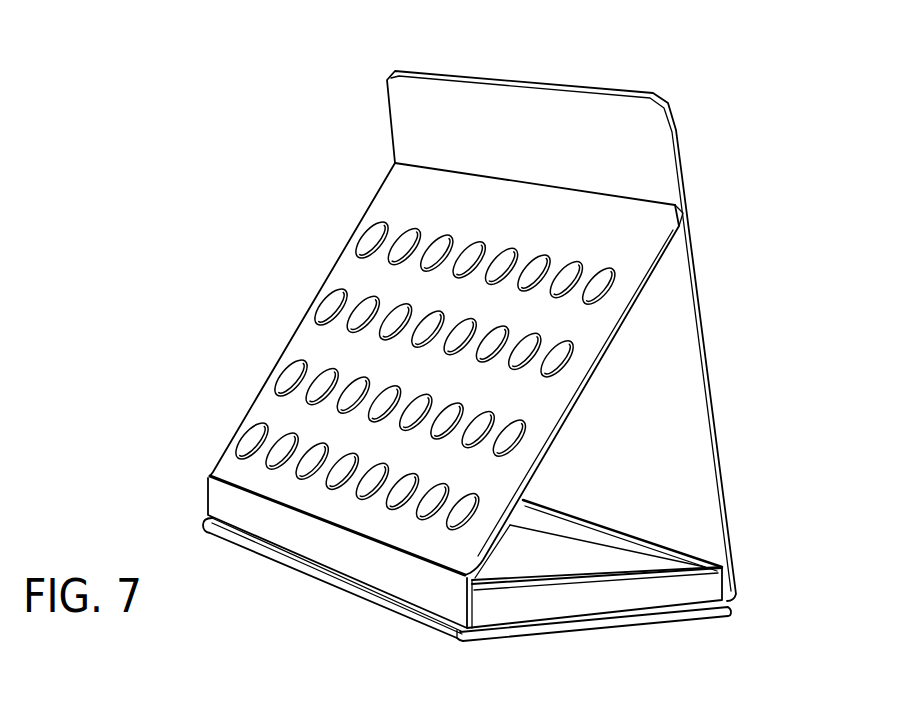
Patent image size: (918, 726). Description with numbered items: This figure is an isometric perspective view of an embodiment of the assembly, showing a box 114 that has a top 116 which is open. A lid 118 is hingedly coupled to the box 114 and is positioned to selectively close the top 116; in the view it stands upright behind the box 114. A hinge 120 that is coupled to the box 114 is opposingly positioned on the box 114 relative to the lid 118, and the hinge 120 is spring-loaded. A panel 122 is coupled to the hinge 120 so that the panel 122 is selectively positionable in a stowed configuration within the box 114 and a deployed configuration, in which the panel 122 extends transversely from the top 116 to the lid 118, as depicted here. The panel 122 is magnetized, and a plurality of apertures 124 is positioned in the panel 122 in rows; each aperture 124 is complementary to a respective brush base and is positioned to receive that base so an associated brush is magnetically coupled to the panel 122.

The box 114 is at (707, 588).
The top 116 is at (630, 572).
The lid 118 is at (587, 92).
The hinge 120 is at (484, 580).
The panel 122 is at (420, 205).
The apertures 124 is at (443, 348).